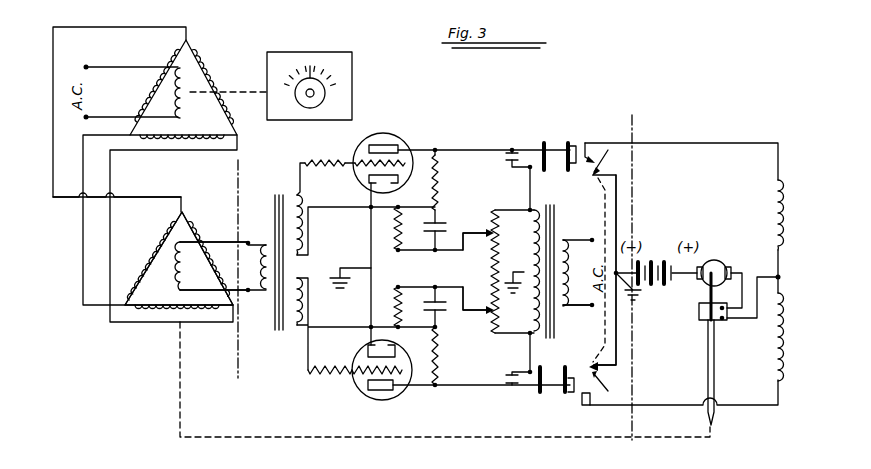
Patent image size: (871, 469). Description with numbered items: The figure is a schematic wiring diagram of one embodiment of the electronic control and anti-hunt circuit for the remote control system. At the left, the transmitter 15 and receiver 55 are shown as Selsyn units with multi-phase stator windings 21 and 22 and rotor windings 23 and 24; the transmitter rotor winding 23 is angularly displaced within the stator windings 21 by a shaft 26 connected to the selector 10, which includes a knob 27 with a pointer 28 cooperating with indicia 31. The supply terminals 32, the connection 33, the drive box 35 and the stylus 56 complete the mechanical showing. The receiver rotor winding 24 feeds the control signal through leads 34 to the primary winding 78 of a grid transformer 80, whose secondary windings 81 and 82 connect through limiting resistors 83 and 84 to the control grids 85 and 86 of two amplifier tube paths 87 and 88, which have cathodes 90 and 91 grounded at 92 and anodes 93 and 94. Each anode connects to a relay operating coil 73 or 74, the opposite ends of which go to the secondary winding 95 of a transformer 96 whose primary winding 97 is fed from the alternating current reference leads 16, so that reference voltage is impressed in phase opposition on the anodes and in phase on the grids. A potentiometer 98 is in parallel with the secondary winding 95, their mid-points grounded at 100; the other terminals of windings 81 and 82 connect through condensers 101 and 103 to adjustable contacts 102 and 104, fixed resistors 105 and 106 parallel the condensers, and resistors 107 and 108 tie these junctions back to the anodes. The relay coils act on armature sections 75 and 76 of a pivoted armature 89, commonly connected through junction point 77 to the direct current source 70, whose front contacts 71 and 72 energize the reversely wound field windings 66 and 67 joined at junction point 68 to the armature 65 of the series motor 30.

The selector 10 is at (322, 87).
The transmitter 15 is at (212, 131).
The leads 16 is at (572, 290).
The stator windings 21 is at (174, 58).
The stator windings 22 is at (196, 237).
The transmitter rotor winding 23 is at (176, 101).
The receiver rotor winding 24 is at (180, 266).
The shaft 26 is at (246, 89).
The knob 27 is at (304, 106).
The pointer 28 is at (324, 64).
The motor 30 is at (578, 345).
The indicia 31 is at (297, 64).
The A.C. supply terminals 32 is at (124, 63).
The connecting lead 33 is at (110, 222).
The leads 34 is at (215, 248).
The drive box 35 is at (697, 327).
The receiver 55 is at (166, 301).
The recording stylus 56 is at (716, 375).
The armature 65 is at (706, 262).
The field winding 66 is at (776, 201).
The field winding 67 is at (790, 323).
The junction point 68 is at (780, 278).
The source of direct current 70 is at (668, 288).
The front contact 71 is at (596, 145).
The front contact 72 is at (587, 407).
The relay operating coil 73 is at (551, 147).
The relay operating coil 74 is at (549, 396).
The relay armature section 75 is at (610, 153).
The relay armature section 76 is at (620, 236).
The junction point 77 is at (628, 276).
The primary winding 78 is at (264, 243).
The grid transformer 80 is at (281, 361).
The secondary winding 81 is at (296, 201).
The secondary winding 82 is at (305, 302).
The limiting resistor 83 is at (325, 159).
The limiting resistor 84 is at (332, 376).
The control grid 85 is at (400, 150).
The control grid 86 is at (368, 392).
The electronic amplifier tube path 87 is at (400, 183).
The electronic amplifier tube path 88 is at (398, 347).
The pivoted armature 89 is at (604, 343).
The cathode 90 is at (362, 177).
The cathode 91 is at (366, 353).
The ground 92 is at (348, 270).
The anode 93 is at (380, 158).
The anode 94 is at (380, 376).
The secondary winding 95 is at (528, 227).
The transformer 96 is at (569, 356).
The primary winding 97 is at (568, 242).
The potentiometer 98 is at (528, 253).
The ground 100 is at (518, 296).
The condenser 101 is at (440, 228).
The adjustable contact 102 is at (477, 234).
The condenser 103 is at (440, 316).
The adjustable contact 104 is at (477, 302).
The fixed resistor 105 is at (399, 249).
The fixed resistor 106 is at (412, 307).
The resistor 107 is at (442, 180).
The resistor 108 is at (440, 348).